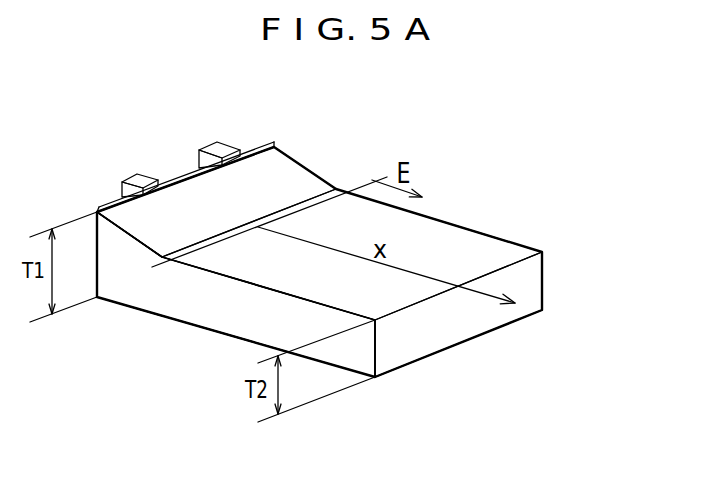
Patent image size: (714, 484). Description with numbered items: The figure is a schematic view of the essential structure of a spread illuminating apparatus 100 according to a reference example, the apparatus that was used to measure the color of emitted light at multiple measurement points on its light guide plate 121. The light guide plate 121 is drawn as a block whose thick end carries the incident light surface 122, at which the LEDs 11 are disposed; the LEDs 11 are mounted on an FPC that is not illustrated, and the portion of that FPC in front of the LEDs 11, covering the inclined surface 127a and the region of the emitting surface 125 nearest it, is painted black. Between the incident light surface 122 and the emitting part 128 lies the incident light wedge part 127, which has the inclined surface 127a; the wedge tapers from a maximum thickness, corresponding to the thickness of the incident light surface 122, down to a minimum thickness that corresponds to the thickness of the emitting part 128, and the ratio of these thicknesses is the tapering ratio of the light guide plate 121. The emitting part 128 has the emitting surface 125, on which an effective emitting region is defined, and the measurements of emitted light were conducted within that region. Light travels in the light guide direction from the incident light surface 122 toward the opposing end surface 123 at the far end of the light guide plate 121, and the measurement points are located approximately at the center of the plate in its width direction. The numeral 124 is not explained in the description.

The spread illuminating apparatus 100 is at (548, 114).
The LEDs 11 is at (140, 184).
The light guide plate 121 is at (320, 270).
The incident light surface 122 is at (182, 175).
The opposing end surface 123 is at (438, 323).
The bottom surface 124 is at (242, 337).
The emitting surface 125 is at (452, 245).
The incident light wedge part 127 is at (127, 262).
The inclined surface 127a is at (298, 183).
The emitting part 128 is at (190, 293).